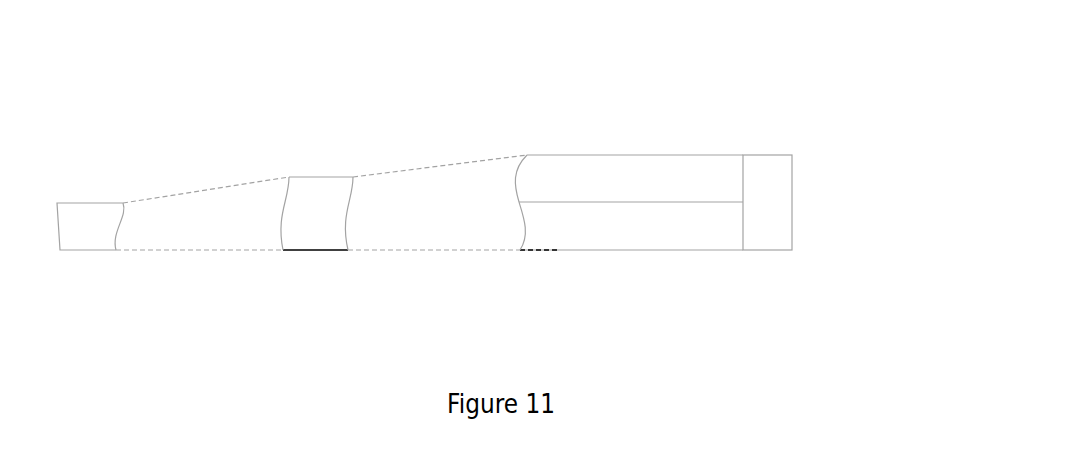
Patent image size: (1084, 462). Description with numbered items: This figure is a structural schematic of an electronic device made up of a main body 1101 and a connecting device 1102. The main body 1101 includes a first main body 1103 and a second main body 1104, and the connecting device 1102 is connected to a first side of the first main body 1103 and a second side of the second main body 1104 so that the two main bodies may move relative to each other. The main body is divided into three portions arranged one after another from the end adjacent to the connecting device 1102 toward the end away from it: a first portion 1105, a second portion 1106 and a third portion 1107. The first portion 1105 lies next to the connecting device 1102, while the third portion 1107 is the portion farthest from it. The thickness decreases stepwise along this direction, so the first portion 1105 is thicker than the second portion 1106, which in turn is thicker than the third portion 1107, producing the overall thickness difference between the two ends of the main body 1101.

The main body 1101 is at (520, 137).
The connecting device 1102 is at (773, 233).
The first main body 1103 is at (572, 166).
The second main body 1104 is at (676, 220).
The first portion 1105 is at (615, 227).
The second portion 1106 is at (297, 228).
The third portion 1107 is at (73, 228).